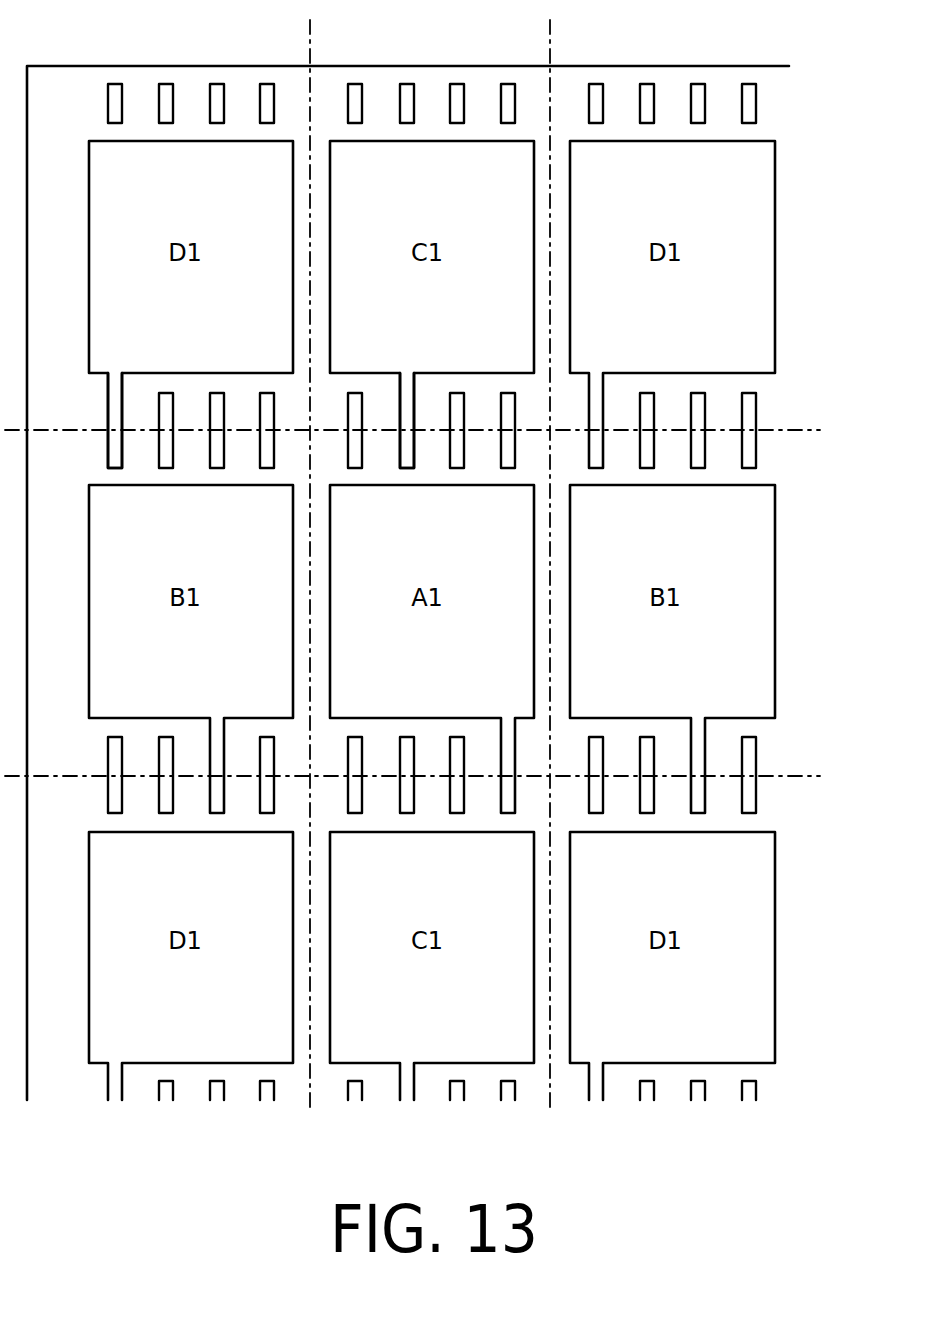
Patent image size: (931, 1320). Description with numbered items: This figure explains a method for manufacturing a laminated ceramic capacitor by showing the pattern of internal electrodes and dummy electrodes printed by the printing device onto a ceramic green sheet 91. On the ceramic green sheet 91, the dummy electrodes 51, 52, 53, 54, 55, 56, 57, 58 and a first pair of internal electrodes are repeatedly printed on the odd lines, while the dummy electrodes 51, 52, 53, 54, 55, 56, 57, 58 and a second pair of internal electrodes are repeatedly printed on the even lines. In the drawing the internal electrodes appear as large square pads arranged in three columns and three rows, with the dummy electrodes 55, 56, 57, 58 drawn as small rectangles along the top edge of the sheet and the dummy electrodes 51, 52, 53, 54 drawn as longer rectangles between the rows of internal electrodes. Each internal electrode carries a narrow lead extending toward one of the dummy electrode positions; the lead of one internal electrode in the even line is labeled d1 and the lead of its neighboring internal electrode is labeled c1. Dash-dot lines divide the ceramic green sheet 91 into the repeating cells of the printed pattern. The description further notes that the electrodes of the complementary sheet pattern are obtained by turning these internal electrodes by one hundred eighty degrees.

The dummy electrode 51 is at (267, 400).
The dummy electrode 52 is at (217, 400).
The dummy electrode 53 is at (166, 400).
The dummy electrode 54 is at (355, 400).
The dummy electrode 55 is at (114, 92).
The dummy electrode 56 is at (165, 92).
The dummy electrode 57 is at (216, 92).
The dummy electrode 58 is at (266, 92).
The ceramic green sheet 91 is at (619, 78).
The connection portion of pixel electrode D1 d1 is at (115, 400).
The connection portion of pixel electrode C1 c1 is at (406, 398).